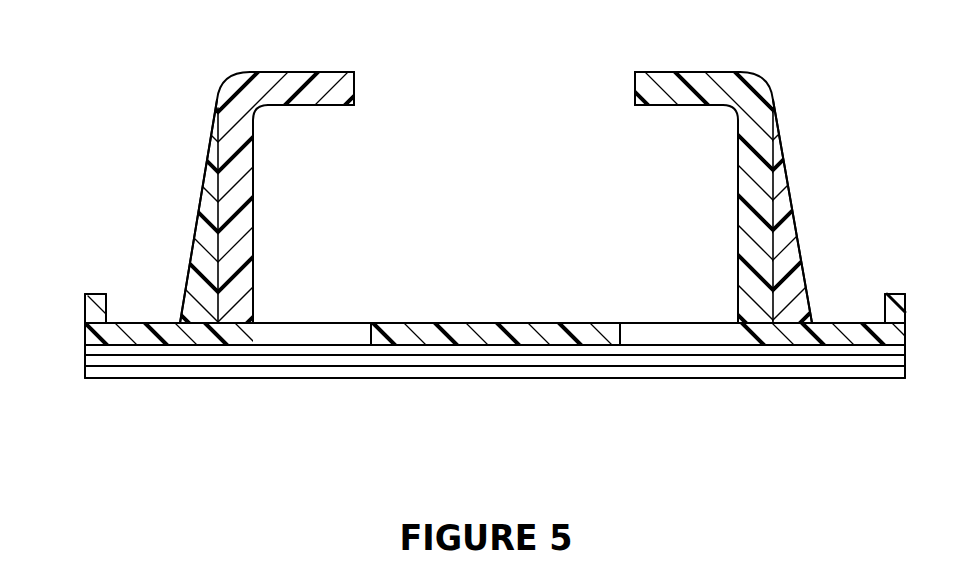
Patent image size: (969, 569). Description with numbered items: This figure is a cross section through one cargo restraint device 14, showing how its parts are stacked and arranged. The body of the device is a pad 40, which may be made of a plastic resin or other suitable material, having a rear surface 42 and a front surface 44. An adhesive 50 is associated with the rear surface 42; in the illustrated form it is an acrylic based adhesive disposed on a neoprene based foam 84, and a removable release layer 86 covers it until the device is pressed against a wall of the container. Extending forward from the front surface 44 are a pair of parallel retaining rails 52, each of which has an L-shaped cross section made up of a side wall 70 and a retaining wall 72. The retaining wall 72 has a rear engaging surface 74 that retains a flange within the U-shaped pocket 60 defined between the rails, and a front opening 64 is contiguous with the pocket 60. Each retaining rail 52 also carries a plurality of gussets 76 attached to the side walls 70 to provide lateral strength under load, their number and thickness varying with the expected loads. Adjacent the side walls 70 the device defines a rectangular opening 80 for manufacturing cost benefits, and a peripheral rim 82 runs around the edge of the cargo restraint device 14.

The cargo restraint device 14 is at (799, 138).
The pad 40 is at (158, 322).
The rear surface 42 is at (790, 345).
The front surface 44 is at (837, 320).
The adhesive 50 is at (357, 359).
The retaining rail 52 is at (255, 213).
The U-shaped pocket 60 is at (667, 107).
The front opening 64 is at (355, 88).
The side wall 70 is at (227, 148).
The retaining wall 72 is at (268, 71).
The rear engaging surface 74 is at (310, 107).
The gusset 76 is at (197, 225).
The rectangular opening 80 is at (370, 340).
The peripheral rim 82 is at (92, 294).
The neoprene based foam 84 is at (473, 347).
The removable release layer 86 is at (288, 380).